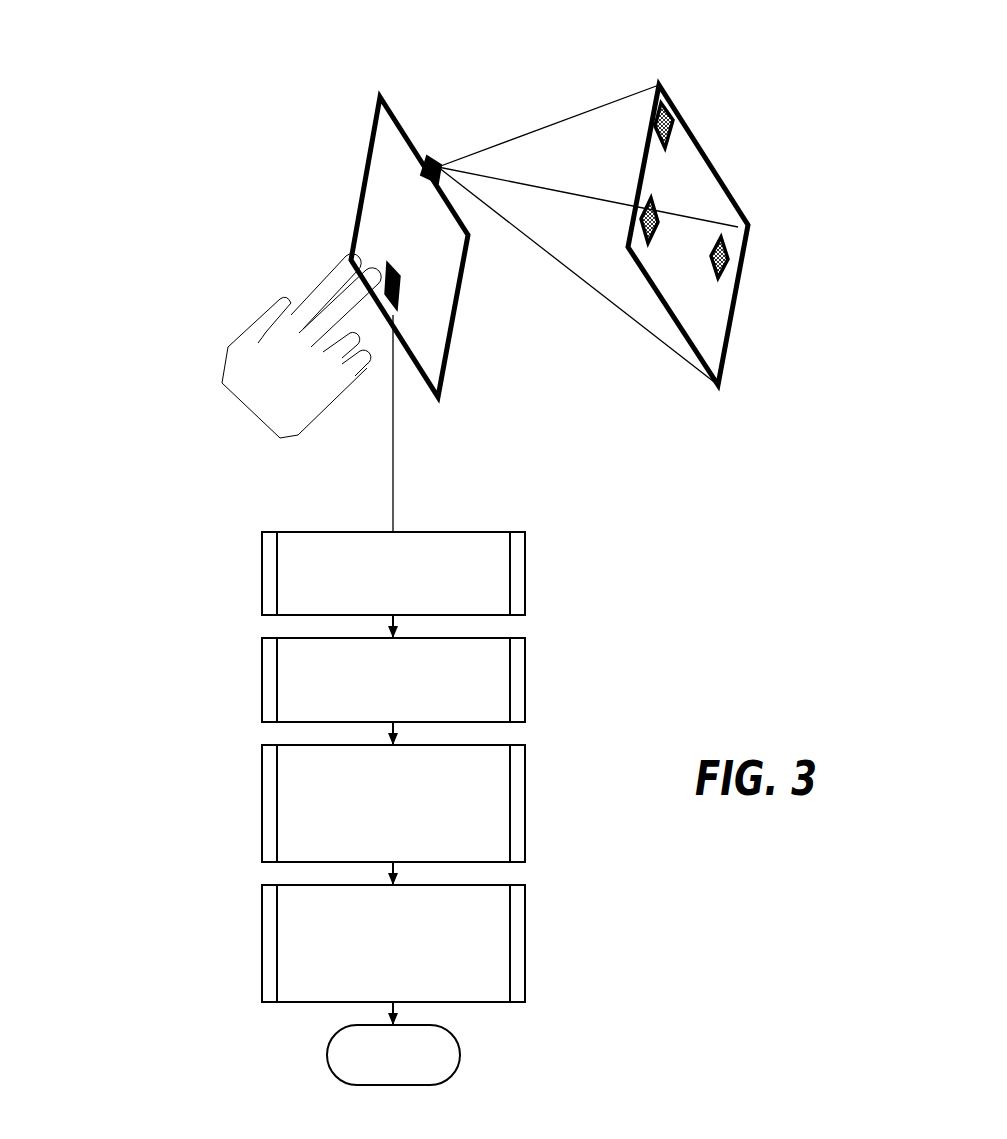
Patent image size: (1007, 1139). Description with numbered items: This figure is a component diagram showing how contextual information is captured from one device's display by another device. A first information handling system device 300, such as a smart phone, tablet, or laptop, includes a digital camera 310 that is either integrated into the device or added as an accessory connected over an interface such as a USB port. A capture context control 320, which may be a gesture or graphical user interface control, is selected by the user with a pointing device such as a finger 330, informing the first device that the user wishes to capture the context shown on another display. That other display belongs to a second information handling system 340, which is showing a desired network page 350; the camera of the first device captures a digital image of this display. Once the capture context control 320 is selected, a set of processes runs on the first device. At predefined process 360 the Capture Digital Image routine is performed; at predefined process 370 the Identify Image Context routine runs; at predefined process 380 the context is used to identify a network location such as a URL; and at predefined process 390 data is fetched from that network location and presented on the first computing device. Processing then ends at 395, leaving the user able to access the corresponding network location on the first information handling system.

The first information handling system device 300 is at (270, 277).
The digital camera 310 is at (579, 196).
The capture context control 320 is at (282, 243).
The finger 330 is at (310, 368).
The second information handling system 340 is at (779, 197).
The desired network page 350 is at (600, 290).
The Capture Digital Image predefined process 360 is at (379, 603).
The Identify Image Context predefined process 370 is at (379, 708).
The Use Context to Identify Network Location predefined process 380 is at (379, 853).
The Fetch Data from Network Location and Present on First Computing Device predefine 390 is at (379, 993).
The end 395 is at (379, 1073).